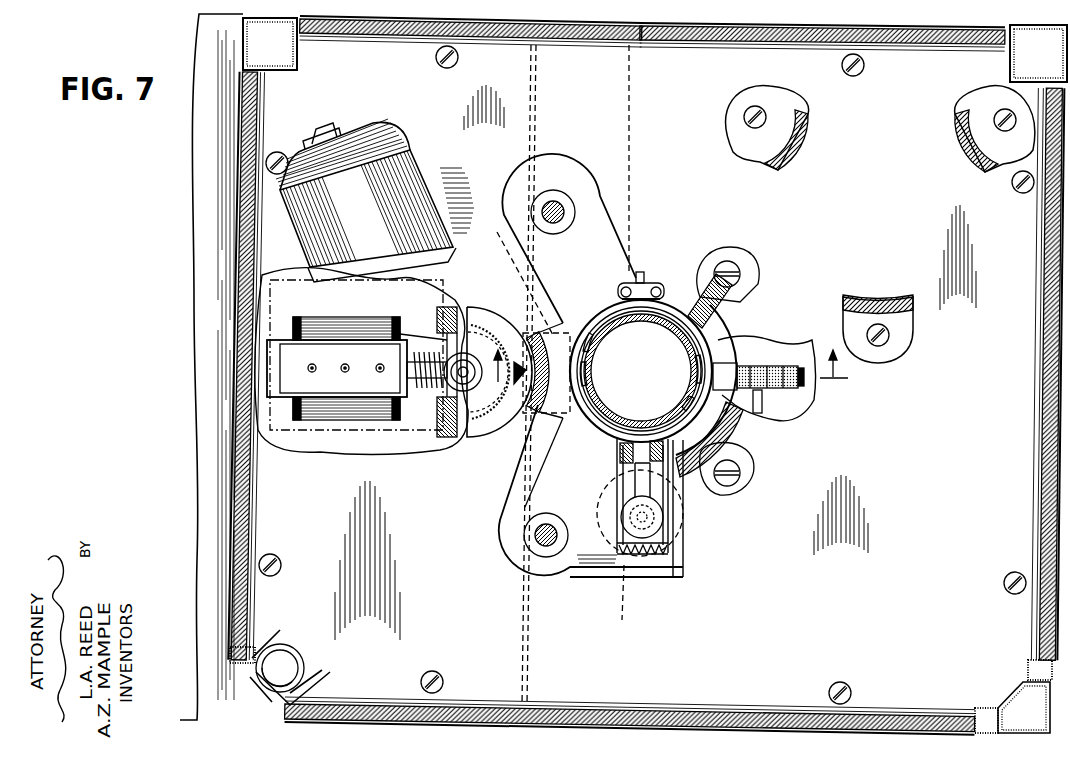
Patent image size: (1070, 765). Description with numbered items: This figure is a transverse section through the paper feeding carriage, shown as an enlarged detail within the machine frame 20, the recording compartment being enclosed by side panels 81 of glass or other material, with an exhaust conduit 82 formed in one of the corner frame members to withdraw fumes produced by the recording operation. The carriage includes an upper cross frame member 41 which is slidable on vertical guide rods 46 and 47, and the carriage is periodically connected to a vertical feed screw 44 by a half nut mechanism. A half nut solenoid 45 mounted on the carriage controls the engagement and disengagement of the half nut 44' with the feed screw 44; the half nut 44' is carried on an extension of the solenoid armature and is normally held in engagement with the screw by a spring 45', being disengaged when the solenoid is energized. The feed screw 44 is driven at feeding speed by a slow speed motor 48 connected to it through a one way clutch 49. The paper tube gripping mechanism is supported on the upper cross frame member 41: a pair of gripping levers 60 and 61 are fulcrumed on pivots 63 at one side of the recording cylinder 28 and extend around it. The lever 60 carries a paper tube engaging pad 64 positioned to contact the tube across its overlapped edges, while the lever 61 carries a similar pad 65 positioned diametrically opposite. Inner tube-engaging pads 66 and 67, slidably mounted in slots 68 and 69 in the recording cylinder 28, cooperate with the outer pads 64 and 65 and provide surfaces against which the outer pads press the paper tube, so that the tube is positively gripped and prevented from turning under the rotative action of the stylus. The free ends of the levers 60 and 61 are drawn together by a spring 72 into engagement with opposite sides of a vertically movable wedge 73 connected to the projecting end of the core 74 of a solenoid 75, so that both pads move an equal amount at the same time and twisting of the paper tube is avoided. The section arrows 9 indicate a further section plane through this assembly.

The machine frame 20 is at (936, 27).
The side panels 81 is at (606, 28).
The exhaust conduit 82 is at (1020, 712).
The slow speed motor 48 is at (403, 178).
The vertical guide rod 46 is at (555, 202).
The upper cross frame member 41 is at (600, 240).
The pivots 63 is at (641, 278).
The paper tube engaging pad 65 is at (707, 358).
The paper tube engaging pad 64 is at (583, 327).
The slot 68 is at (586, 347).
The recording cylinder 28 is at (668, 328).
The inner tube-engaging pad 66 is at (588, 370).
The inner tube-engaging pad 67 is at (703, 370).
The slot 69 is at (688, 400).
The gripping lever 60 is at (591, 428).
The gripping lever 61 is at (708, 408).
The half nut solenoid 45 is at (357, 385).
The spring 45' is at (423, 386).
The vertical feed screw 44 is at (449, 390).
The half nut 44' is at (437, 403).
The one way clutch 49 is at (485, 425).
The section arrow 9 is at (666, 378).
The vertical guide rod 47 is at (548, 542).
The core 74 is at (604, 513).
The wedge 73 is at (663, 505).
The solenoid 75 is at (680, 520).
The spring 72 is at (653, 558).